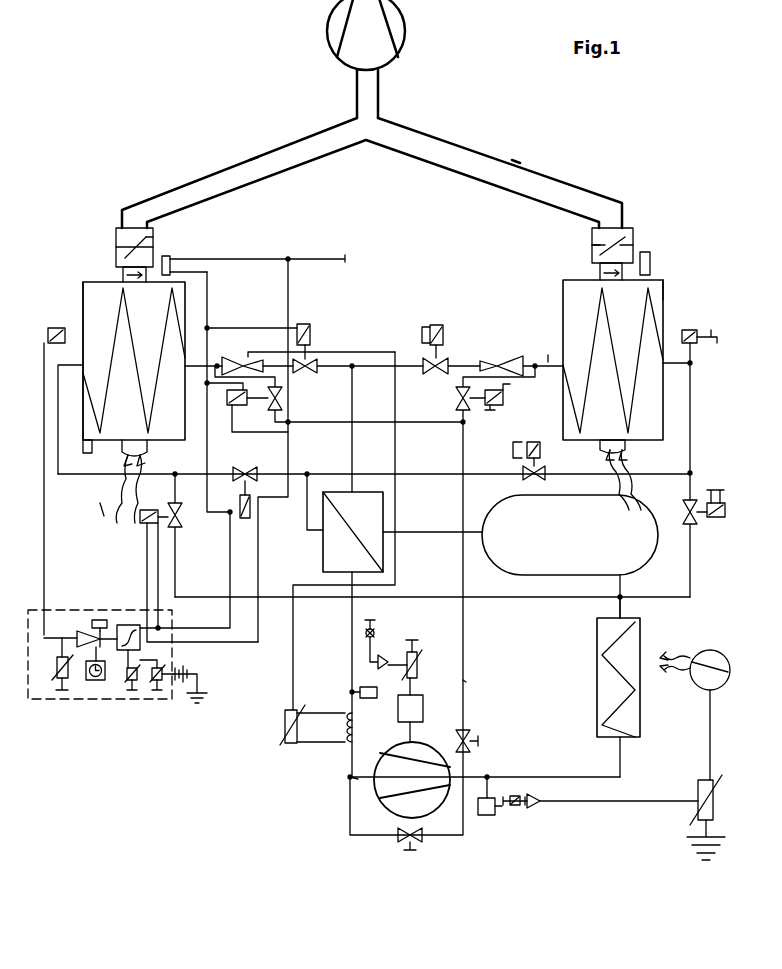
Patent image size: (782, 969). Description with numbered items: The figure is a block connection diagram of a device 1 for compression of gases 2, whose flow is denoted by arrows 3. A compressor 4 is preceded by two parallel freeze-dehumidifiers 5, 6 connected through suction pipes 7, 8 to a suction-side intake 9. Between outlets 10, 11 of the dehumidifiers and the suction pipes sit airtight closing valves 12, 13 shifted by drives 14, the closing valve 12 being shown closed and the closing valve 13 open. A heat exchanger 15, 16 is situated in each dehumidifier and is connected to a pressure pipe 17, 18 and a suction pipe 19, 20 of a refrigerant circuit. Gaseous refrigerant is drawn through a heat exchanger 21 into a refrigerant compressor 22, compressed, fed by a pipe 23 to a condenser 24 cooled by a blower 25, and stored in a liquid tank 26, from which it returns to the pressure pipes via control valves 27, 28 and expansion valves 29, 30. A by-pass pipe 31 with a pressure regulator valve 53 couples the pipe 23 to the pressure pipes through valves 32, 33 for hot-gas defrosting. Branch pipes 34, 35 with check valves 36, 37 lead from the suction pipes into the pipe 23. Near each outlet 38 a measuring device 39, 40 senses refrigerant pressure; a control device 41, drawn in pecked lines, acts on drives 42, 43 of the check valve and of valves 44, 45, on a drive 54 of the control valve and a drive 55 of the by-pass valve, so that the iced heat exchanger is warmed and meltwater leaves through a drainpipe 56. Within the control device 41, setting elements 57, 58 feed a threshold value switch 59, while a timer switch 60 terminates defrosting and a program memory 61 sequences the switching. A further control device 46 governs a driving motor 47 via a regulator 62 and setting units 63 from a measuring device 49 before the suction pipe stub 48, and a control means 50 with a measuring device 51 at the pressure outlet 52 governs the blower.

The device for compression of gases 1 is at (172, 125).
The gas 2 is at (100, 503).
The arrows 3 is at (103, 516).
The compressor 4 is at (407, 22).
The freeze-dehumidifier 5 is at (82, 270).
The freeze-dehumidifier 6 is at (660, 240).
The suction pipe 7 is at (240, 160).
The suction pipe 8 is at (520, 160).
The suction-side intake 9 is at (378, 86).
The outlet 10 is at (116, 240).
The outlet 11 is at (566, 280).
The closing valve 12 is at (154, 238).
The closing valve 13 is at (585, 237).
The drive 14 is at (168, 258).
The heat exchanger 15 is at (113, 325).
The heat exchanger 16 is at (612, 330).
The pressure pipe 17 is at (195, 358).
The pressure pipe 18 is at (548, 358).
The suction pipe 19 is at (73, 367).
The suction pipe 20 is at (672, 365).
The heat exchanger 21 is at (318, 558).
The refrigerant compressor 22 is at (402, 803).
The pipe 23 is at (598, 780).
The condenser 24 is at (642, 650).
The blower 25 is at (718, 690).
The liquid tank 26 is at (640, 540).
The control valve 27 is at (322, 358).
The control valve 28 is at (430, 360).
The expansion valve 29 is at (236, 350).
The expansion valve 30 is at (507, 358).
The by-pass pipe 31 is at (465, 680).
The valve 32 is at (287, 398).
The valve 33 is at (456, 398).
The branch pipe 34 is at (187, 525).
The branch pipe 35 is at (665, 600).
The check valve 36 is at (205, 600).
The check valve 37 is at (697, 520).
The outlet 38 is at (77, 347).
The temperature and/or pressure measuring device 39 is at (47, 343).
The temperature and/or pressure measuring device 40 is at (700, 340).
The control device 41 is at (135, 700).
The drive 42 is at (137, 530).
The drive 43 is at (263, 513).
The valve 44 is at (236, 470).
The valve 45 is at (528, 473).
The control device 46 is at (362, 697).
The driving motor 47 is at (387, 700).
The suction pipe stub 48 is at (363, 780).
The temperature and/or pressure measuring device 49 is at (295, 722).
The control means 50 is at (537, 812).
The temperature and/or pressure measuring device 51 is at (490, 815).
The pressure outlet 52 is at (452, 785).
The pressure regulator valve 53 is at (466, 752).
The drive 54 is at (310, 325).
The drive 55 is at (240, 406).
The drainpipe 56 is at (84, 447).
The setting element 57 is at (128, 652).
The setting element 58 is at (160, 682).
The threshold value switch 59 is at (120, 648).
The timer switch 60 is at (92, 682).
The program memory 61 is at (93, 640).
The regulator 62 is at (417, 661).
The setting unit 63 is at (375, 632).